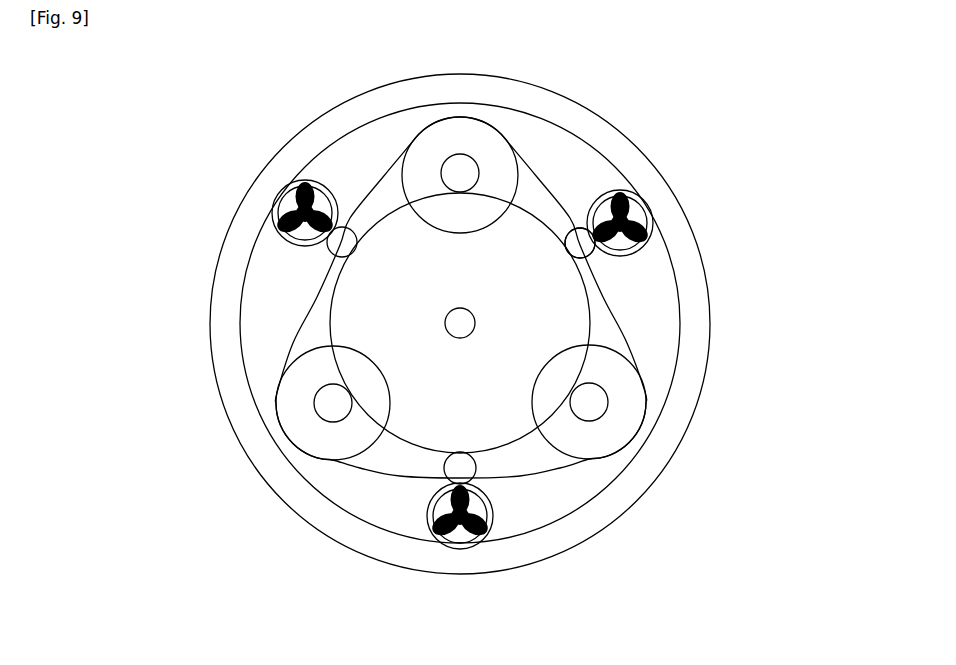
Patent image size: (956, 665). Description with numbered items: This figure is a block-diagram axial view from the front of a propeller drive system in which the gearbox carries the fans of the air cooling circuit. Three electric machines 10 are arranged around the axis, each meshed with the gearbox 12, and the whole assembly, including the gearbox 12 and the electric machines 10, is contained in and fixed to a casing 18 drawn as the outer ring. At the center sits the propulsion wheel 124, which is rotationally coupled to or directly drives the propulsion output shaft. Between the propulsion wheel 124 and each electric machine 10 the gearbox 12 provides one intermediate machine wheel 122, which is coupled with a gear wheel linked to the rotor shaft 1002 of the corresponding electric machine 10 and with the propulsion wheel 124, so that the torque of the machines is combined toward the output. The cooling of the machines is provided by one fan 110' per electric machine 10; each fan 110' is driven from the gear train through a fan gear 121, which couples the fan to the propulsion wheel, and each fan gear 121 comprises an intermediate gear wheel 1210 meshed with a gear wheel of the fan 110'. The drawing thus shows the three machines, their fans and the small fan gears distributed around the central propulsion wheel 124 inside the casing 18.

The electric machine 10 is at (305, 427).
The gearbox 12 is at (262, 290).
The casing 18 is at (638, 490).
The fan 110' is at (397, 338).
The fan gear 121 is at (581, 228).
The intermediate machine wheel 122 is at (360, 293).
The propulsion wheel 124 is at (468, 322).
The rotor shaft 1002 is at (588, 409).
The intermediate gear wheel 1210 is at (584, 248).